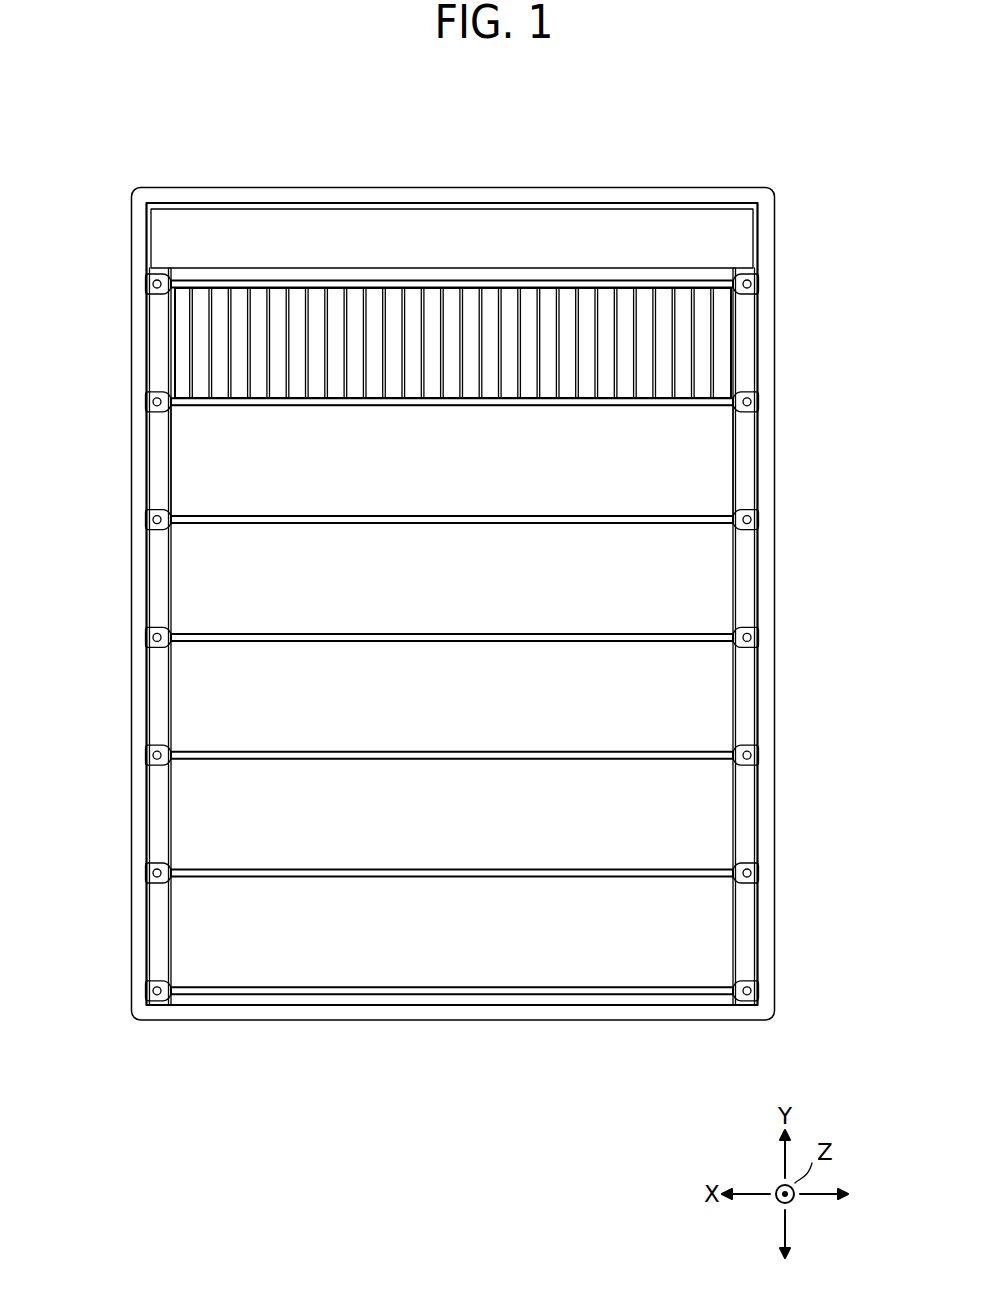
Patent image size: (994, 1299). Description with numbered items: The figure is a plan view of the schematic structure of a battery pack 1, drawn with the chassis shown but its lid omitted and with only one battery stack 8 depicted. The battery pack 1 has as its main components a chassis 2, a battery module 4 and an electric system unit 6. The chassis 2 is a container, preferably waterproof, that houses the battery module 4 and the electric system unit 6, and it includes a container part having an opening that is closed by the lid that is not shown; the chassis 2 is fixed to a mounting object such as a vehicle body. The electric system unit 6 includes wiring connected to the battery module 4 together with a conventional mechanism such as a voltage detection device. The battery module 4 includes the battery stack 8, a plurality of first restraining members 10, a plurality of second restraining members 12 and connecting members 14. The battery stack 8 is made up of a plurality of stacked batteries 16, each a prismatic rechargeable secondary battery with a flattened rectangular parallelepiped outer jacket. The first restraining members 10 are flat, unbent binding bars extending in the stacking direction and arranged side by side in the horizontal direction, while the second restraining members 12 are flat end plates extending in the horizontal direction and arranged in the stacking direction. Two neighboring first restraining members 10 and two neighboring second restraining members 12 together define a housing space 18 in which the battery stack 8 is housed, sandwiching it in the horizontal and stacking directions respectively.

The battery pack 1 is at (466, 1171).
The chassis 2 is at (775, 973).
The battery module 4 is at (678, 998).
The electric system unit 6 is at (725, 207).
The battery stack 8 is at (724, 338).
The first restraining member 10 is at (687, 280).
The second restraining member 12 is at (153, 463).
The connecting member 14 is at (147, 282).
The battery 16 is at (643, 298).
The housing space 18 is at (692, 482).